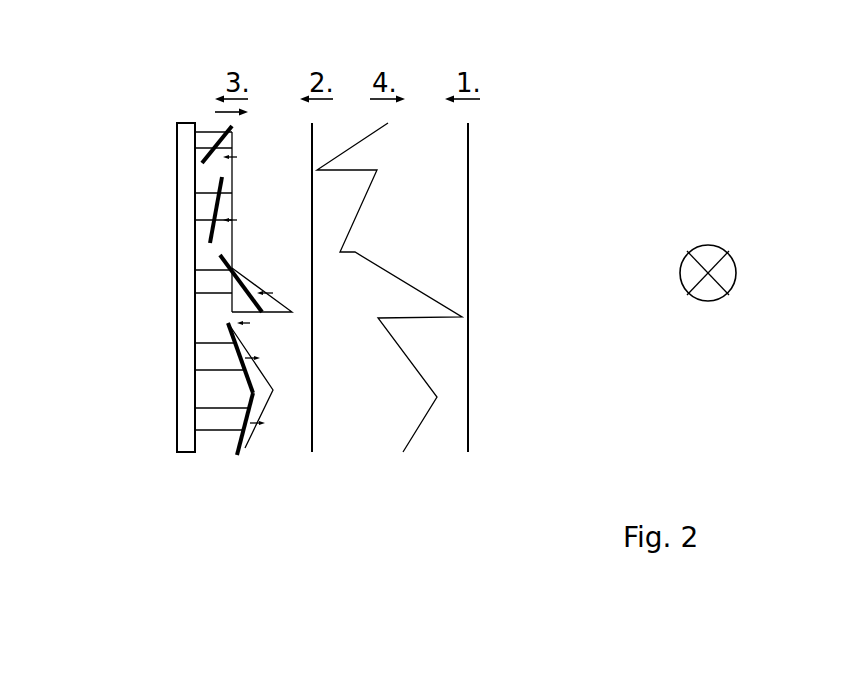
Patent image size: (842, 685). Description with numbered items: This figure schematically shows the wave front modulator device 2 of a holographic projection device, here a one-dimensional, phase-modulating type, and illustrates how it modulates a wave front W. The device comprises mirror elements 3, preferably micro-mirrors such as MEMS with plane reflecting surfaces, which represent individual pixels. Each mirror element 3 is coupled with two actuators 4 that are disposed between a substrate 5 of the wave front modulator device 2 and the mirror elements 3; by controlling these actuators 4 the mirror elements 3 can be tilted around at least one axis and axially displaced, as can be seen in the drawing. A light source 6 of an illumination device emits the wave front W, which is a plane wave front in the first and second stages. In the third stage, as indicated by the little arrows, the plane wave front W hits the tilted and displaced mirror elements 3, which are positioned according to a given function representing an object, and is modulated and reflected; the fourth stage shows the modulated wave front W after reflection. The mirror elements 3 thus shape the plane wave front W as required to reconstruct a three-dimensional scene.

The wave front modulator device 2 is at (142, 103).
The mirror elements 3 is at (241, 365).
The actuators 4 is at (215, 410).
The substrate 5 is at (180, 402).
The light source 6 is at (703, 292).
The wave front W is at (468, 183).